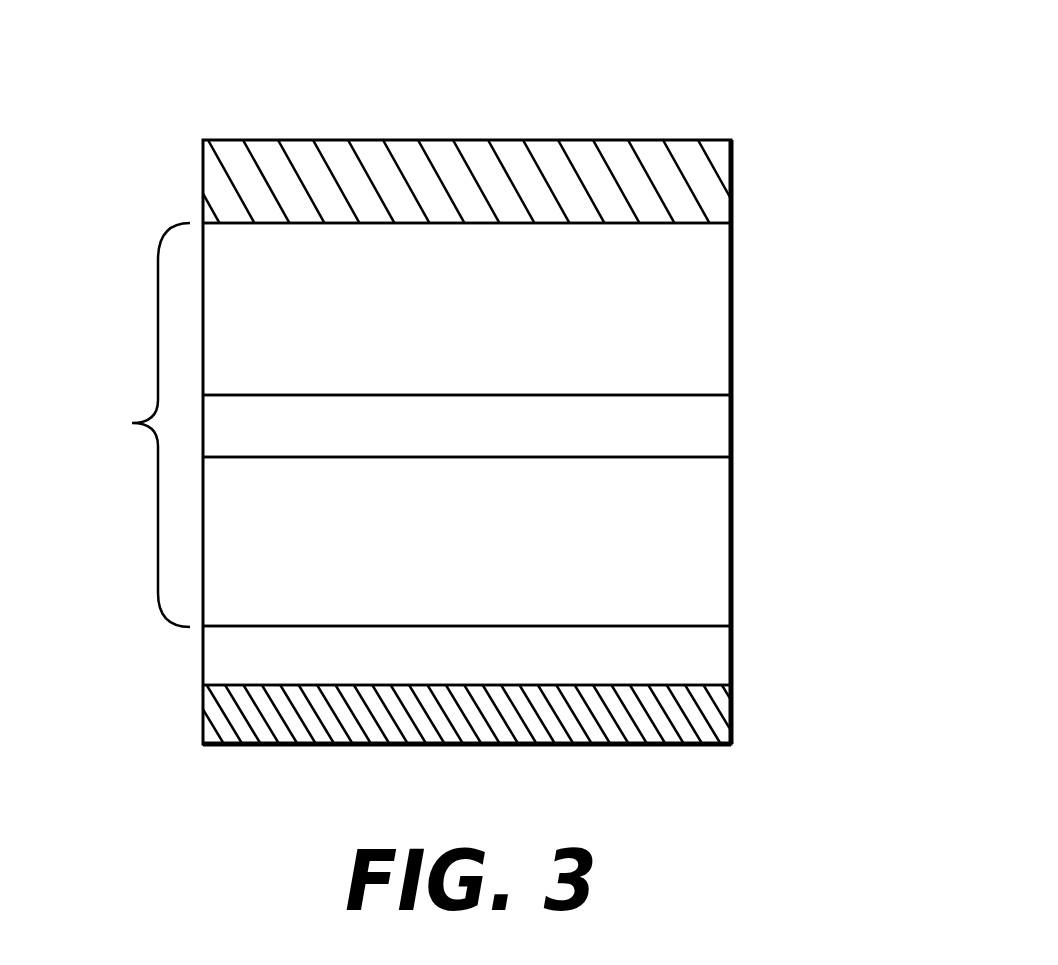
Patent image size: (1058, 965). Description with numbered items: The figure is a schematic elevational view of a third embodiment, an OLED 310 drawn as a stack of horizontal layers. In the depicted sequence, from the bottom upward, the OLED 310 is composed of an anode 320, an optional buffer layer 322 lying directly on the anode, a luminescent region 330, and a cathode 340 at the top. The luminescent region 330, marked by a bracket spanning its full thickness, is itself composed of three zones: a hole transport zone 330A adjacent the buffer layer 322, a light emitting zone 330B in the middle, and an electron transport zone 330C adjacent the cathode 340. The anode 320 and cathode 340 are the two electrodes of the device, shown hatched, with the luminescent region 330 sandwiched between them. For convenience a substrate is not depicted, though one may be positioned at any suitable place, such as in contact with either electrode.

The OLED 310 is at (586, 92).
The anode 320 is at (715, 718).
The buffer layer 322 is at (715, 653).
The luminescent region 330 is at (112, 443).
The hole transport zone 330A is at (715, 555).
The light emitting zone 330B is at (715, 415).
The electron transport zone 330C is at (715, 310).
The cathode 340 is at (715, 180).